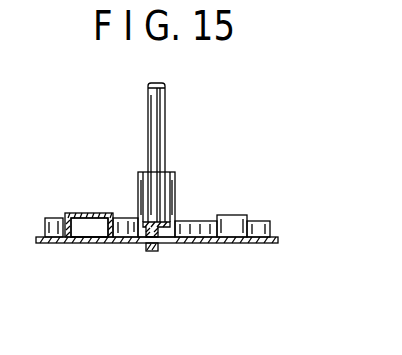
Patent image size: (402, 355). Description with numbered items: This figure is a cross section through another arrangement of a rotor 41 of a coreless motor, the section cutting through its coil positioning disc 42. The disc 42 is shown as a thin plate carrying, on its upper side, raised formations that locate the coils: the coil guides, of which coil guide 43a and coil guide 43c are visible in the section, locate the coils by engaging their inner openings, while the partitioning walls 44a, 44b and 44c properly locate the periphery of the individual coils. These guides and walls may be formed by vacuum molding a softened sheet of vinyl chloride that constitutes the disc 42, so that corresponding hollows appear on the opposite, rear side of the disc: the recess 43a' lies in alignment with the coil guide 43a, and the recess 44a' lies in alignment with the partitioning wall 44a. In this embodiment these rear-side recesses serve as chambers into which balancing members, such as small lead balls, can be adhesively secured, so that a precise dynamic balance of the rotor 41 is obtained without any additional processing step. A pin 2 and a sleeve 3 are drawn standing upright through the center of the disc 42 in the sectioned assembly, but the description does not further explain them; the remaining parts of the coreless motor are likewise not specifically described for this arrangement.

The pin 2 is at (163, 100).
The sleeve 3 is at (167, 193).
The rotor 41 is at (208, 135).
The coil positioning disc 42 is at (258, 244).
The coil guide 43a is at (89, 208).
The recess 43a' is at (84, 247).
The coil guide 43c is at (222, 216).
The partitioning wall 44a is at (132, 195).
The recess 44a' is at (179, 259).
The partitioning wall 44b is at (53, 219).
The partitioning wall 44c is at (261, 222).